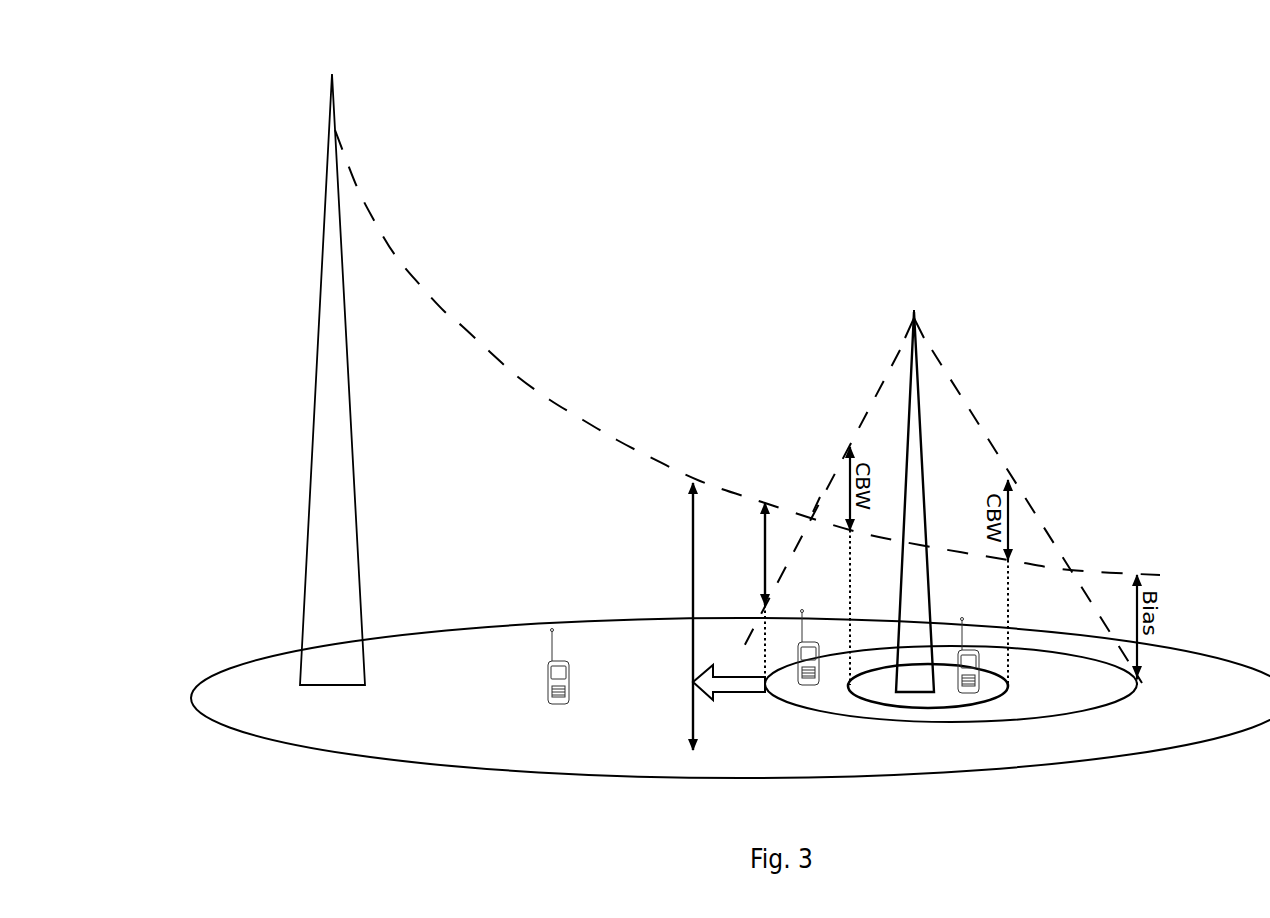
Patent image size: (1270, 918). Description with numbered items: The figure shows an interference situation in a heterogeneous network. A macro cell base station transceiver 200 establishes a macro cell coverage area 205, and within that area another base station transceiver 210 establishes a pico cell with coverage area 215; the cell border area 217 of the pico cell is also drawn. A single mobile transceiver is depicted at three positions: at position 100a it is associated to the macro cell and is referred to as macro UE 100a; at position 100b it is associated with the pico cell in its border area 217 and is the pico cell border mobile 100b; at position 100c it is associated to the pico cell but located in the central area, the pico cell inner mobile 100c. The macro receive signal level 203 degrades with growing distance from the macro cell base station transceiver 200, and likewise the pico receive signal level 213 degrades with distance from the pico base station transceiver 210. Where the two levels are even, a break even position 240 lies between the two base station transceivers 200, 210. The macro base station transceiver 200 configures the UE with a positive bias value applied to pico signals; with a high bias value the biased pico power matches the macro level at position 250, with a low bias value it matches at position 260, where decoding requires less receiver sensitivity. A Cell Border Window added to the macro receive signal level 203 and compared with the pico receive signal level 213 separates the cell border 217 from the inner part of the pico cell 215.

The macro UE 100a is at (568, 700).
The pico cell border mobile 100b is at (808, 690).
The pico cell inner mobile 100c is at (980, 690).
The macro cell base station transceiver 200 is at (312, 452).
The macro receive signal level 203 is at (372, 212).
The macro cell coverage area 205 is at (200, 712).
The pico cell base station transceiver 210 is at (921, 490).
The pico receive signal level 213 is at (871, 400).
The pico cell coverage area 215 is at (1137, 690).
The cell border area 217 is at (1087, 690).
The break even position 240 is at (808, 525).
The high bias match position 250 is at (690, 523).
The low bias match position 260 is at (764, 502).